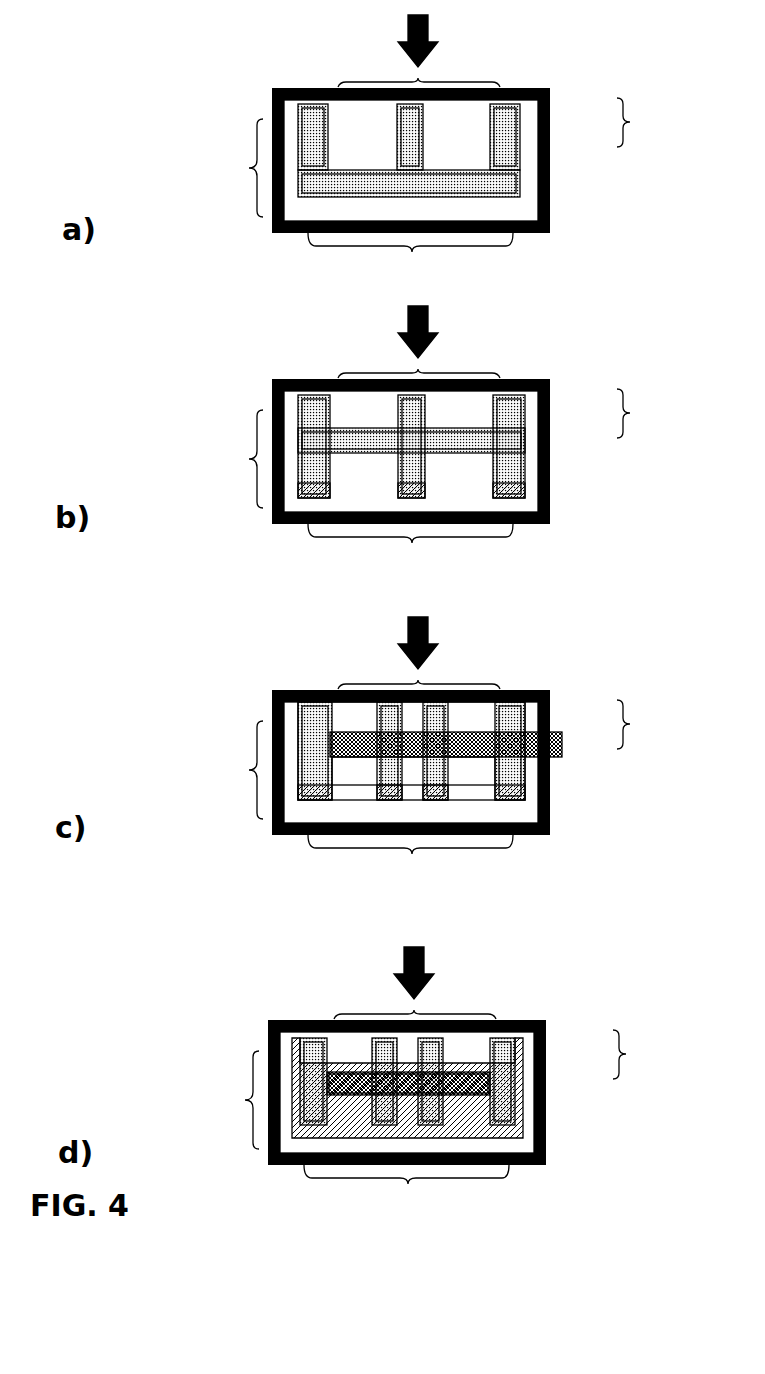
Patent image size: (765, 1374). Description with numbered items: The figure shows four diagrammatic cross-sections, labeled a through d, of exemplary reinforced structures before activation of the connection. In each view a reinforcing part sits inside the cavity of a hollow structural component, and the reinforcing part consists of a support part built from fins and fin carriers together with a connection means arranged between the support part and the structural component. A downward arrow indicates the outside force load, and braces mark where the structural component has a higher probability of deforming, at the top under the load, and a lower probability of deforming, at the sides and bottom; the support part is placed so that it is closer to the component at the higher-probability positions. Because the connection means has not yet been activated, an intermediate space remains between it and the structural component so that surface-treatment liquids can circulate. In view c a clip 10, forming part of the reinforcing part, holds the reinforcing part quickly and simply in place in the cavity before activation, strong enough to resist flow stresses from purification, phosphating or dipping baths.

The clip 10 is at (488, 762).